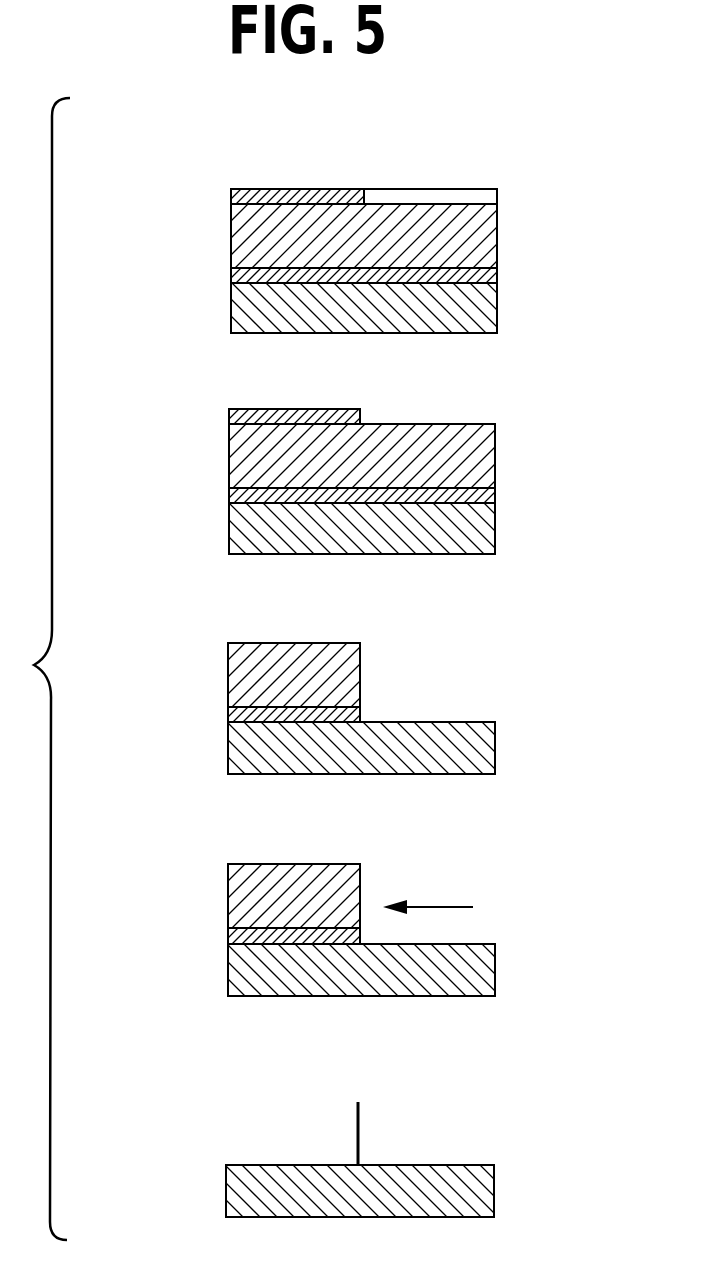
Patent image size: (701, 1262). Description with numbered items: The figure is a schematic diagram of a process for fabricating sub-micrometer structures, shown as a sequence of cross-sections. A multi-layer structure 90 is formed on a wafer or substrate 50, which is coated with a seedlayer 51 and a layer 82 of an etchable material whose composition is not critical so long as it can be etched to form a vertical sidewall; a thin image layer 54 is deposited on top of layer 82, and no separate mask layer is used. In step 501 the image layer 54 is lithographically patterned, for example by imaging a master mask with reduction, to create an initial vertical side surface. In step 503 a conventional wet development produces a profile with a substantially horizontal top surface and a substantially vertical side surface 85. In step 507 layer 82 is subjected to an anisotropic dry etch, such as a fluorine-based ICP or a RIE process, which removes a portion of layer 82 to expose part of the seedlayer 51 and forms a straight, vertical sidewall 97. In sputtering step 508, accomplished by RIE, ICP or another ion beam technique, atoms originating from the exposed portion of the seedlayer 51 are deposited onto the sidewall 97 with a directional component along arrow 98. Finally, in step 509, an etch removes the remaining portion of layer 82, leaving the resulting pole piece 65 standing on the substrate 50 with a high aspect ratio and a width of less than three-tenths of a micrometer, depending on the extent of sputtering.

The substrate 50 is at (497, 312).
The seedlayer 51 is at (231, 276).
The image layer 54 is at (497, 200).
The pole piece 65 is at (360, 1138).
The etchable layer 82 is at (497, 247).
The vertical side surface 85 is at (362, 416).
The multi-layer structure 90 is at (261, 173).
The sidewall 97 is at (362, 672).
The arrow 98 is at (437, 905).
The patterning step 501 is at (170, 232).
The wet development step 503 is at (170, 451).
The dry etch step 507 is at (170, 690).
The sputtering step 508 is at (170, 908).
The etch step 509 is at (170, 1148).